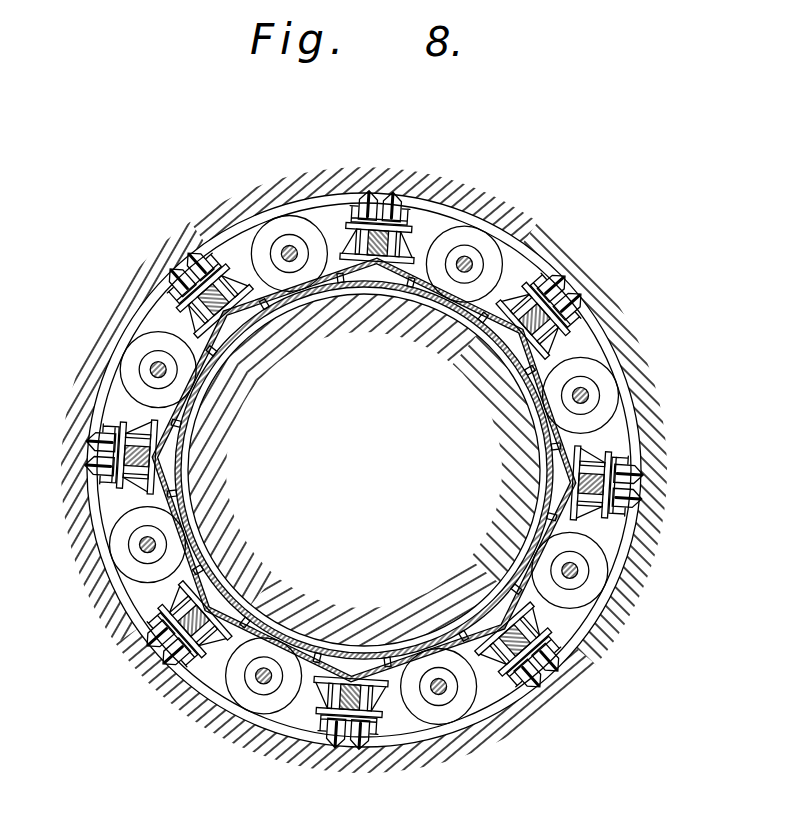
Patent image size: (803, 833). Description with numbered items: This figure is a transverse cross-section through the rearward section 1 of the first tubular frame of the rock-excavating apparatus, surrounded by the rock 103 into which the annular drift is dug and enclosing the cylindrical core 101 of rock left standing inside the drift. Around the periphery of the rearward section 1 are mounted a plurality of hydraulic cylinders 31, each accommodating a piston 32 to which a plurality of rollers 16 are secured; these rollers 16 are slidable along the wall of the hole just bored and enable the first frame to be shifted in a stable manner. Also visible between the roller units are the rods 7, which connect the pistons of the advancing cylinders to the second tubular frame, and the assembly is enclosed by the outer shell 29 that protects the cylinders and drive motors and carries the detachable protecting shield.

The rearward section of the first frame 1 is at (230, 610).
The rods 7 is at (158, 367).
The rollers 16 is at (400, 195).
The outer shell 29 is at (612, 345).
The hydraulic cylinders 31 is at (374, 258).
The pistons 32 is at (420, 217).
The cylindrical core 101 is at (364, 470).
The rock 103 is at (575, 652).